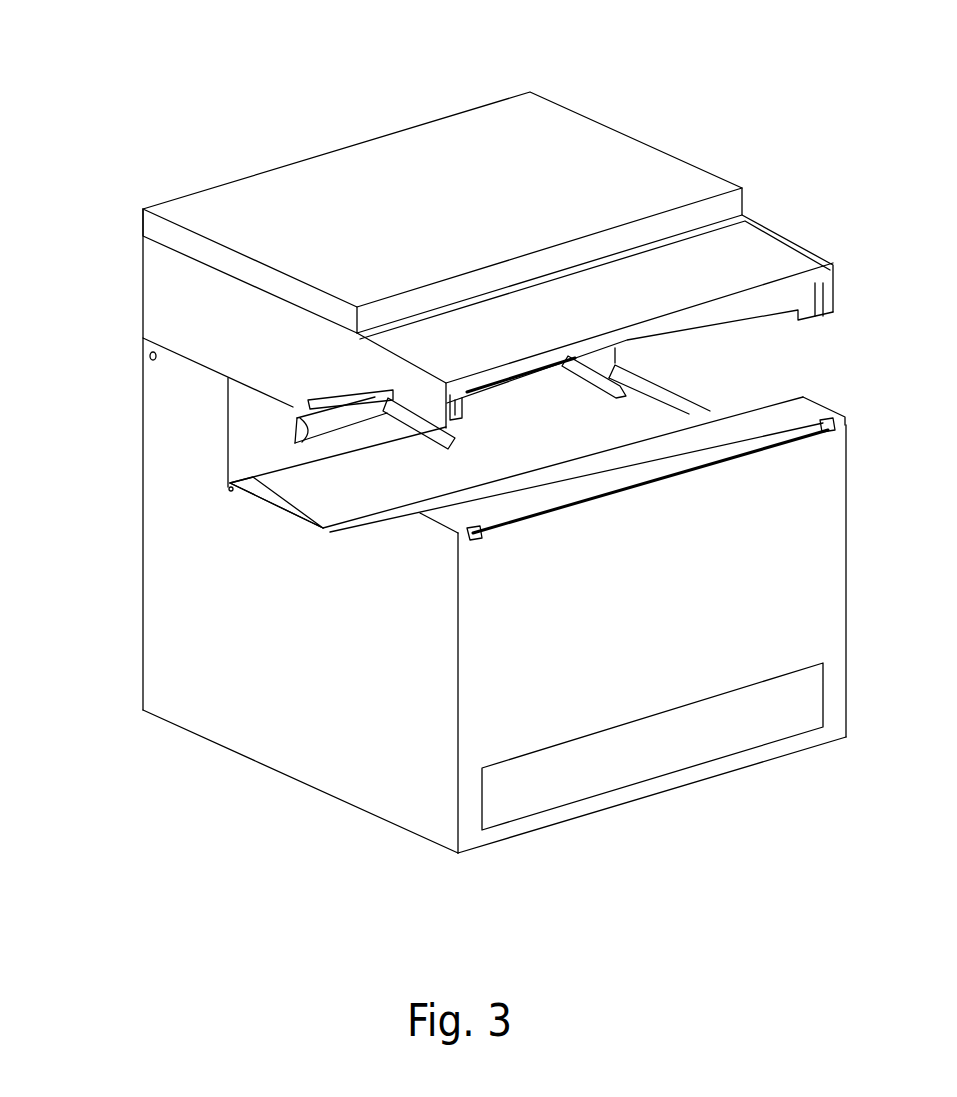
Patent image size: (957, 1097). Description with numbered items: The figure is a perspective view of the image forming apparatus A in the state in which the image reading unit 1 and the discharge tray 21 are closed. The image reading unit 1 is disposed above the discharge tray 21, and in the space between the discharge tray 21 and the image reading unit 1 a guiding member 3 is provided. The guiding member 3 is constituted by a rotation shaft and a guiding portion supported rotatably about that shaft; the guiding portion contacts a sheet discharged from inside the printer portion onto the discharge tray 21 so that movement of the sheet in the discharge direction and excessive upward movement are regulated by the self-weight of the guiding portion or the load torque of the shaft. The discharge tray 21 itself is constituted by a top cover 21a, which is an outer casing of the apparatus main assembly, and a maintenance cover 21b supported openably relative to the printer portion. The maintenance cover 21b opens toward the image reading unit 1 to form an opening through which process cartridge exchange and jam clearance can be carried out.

The image forming apparatus A is at (249, 127).
The image reading unit 1 is at (158, 293).
The guiding member 3 is at (623, 392).
The discharge tray 21 is at (260, 898).
The top cover 21a is at (267, 490).
The maintenance cover 21b is at (328, 495).